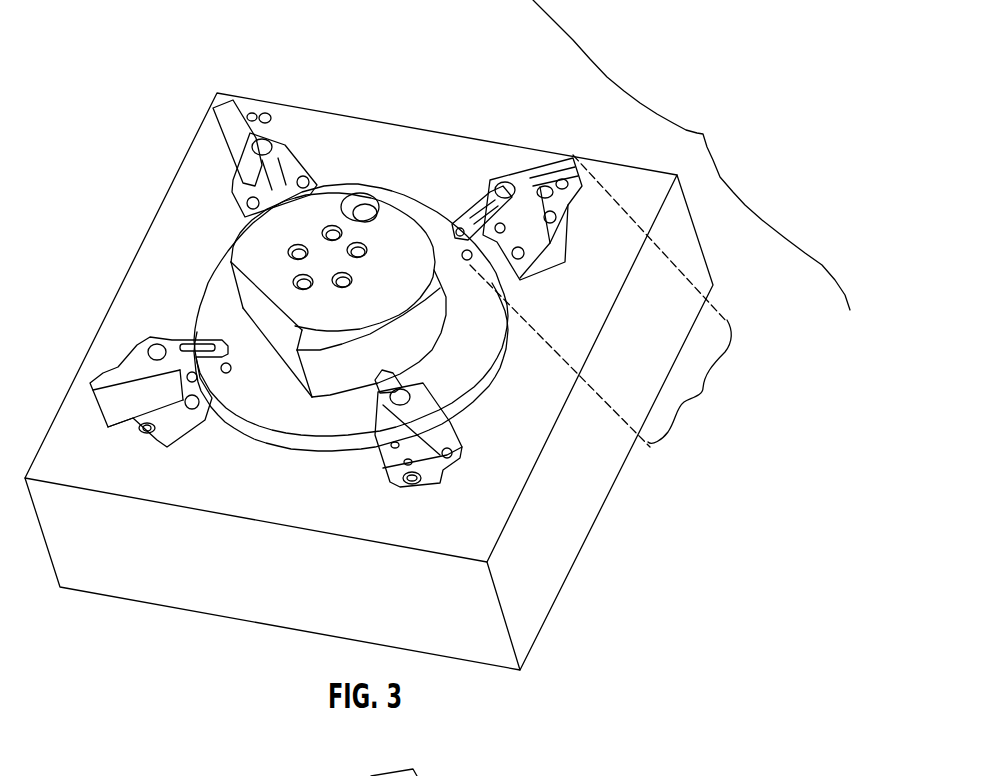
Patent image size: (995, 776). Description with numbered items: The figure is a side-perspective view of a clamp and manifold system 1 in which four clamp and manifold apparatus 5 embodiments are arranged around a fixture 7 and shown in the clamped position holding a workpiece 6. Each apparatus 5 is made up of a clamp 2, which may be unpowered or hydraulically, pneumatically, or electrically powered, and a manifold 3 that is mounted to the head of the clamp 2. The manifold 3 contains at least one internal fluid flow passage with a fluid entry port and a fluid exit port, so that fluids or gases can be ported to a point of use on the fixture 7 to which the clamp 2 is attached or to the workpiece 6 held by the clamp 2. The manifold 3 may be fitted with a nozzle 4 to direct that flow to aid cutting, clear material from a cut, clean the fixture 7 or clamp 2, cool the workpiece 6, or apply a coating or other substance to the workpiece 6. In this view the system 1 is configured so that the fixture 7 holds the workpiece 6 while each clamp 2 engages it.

The clamp and manifold system 1 is at (691, 155).
The clamp 2 is at (472, 222).
The manifold 3 is at (563, 148).
The nozzle 4 is at (580, 194).
The clamp and manifold apparatus 5 is at (600, 301).
The workpiece 6 is at (215, 296).
The fixture 7 is at (170, 245).